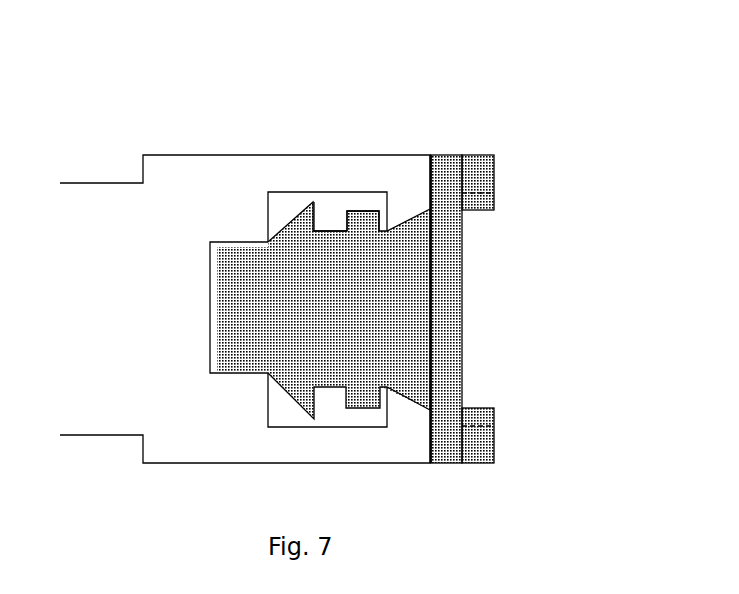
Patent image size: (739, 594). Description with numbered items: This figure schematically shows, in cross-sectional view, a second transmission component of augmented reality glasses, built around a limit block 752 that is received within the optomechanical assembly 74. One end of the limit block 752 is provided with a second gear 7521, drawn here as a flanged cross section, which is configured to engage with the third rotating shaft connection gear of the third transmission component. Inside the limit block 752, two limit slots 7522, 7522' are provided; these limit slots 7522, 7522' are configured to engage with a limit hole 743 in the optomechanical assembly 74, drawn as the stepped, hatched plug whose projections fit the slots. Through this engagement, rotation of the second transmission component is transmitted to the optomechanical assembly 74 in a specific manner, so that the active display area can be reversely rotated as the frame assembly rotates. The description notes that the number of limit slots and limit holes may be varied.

The optomechanical assembly 74 is at (90, 208).
The limit hole 743 is at (280, 223).
The limit block 752 is at (501, 233).
The second gear 7521 is at (475, 203).
The limit slot 7522 is at (316, 140).
The limit slot 7522' is at (376, 141).